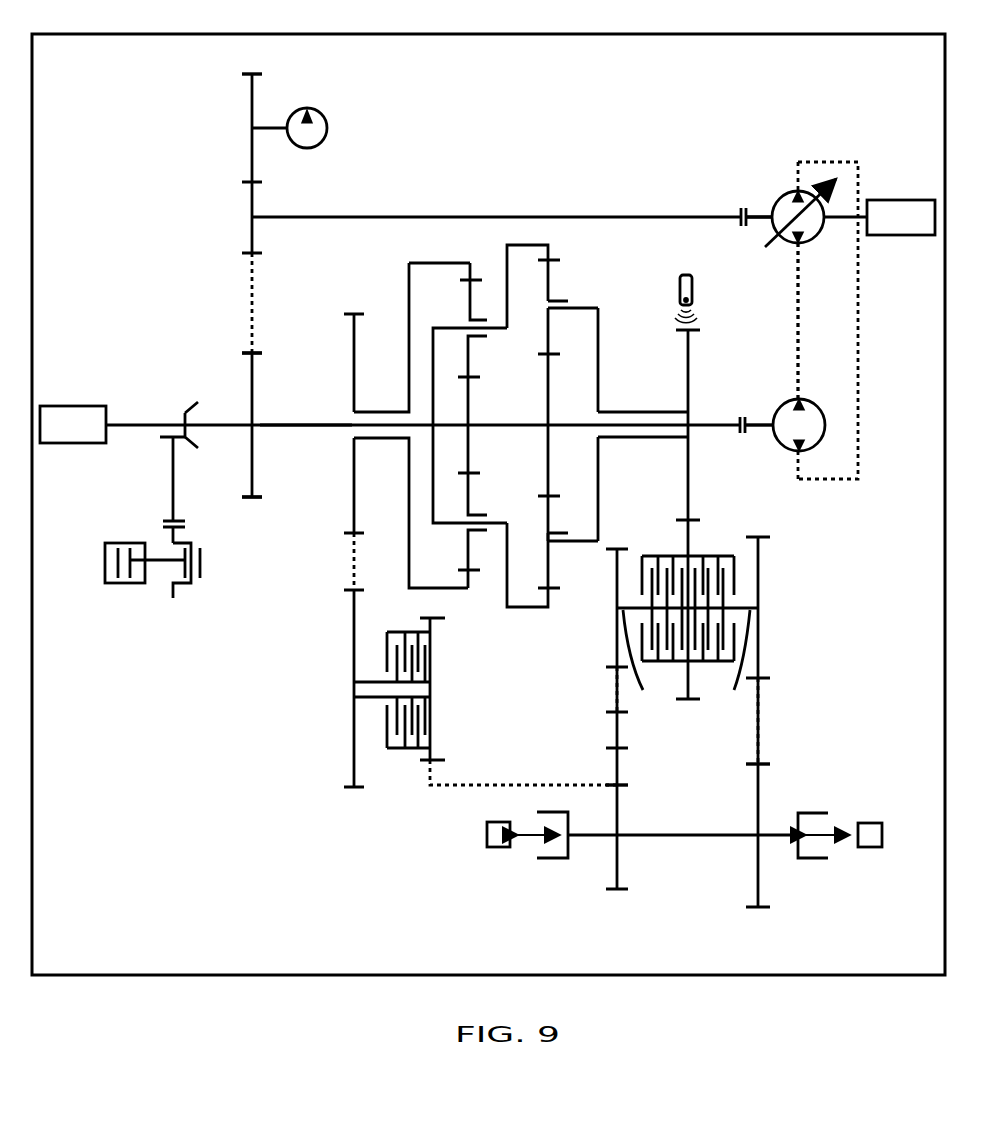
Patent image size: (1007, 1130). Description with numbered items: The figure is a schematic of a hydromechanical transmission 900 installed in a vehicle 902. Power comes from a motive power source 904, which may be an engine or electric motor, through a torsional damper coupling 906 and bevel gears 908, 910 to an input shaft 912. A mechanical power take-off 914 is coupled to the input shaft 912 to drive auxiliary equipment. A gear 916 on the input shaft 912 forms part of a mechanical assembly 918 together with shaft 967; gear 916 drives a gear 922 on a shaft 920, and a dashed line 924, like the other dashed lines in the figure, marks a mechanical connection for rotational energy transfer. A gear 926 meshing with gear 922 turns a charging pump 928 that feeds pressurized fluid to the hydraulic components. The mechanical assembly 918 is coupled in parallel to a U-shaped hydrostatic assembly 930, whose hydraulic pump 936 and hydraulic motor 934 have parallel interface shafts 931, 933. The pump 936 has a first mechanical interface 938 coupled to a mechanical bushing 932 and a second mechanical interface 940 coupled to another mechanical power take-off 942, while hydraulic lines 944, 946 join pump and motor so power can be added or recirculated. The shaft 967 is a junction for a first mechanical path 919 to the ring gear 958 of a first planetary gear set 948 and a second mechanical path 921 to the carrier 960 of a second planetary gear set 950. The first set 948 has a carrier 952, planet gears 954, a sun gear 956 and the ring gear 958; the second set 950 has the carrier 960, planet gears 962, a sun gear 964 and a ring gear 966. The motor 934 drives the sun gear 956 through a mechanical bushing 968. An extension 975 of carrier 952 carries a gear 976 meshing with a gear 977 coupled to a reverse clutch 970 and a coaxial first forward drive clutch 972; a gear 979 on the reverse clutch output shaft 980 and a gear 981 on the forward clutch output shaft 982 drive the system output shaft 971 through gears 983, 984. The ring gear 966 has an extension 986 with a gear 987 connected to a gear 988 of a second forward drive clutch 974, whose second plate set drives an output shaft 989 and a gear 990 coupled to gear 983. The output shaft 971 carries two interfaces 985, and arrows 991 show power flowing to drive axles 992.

The transmission 900 is at (892, 86).
The vehicle 902 is at (40, 34).
The motive power source 904 is at (177, 634).
The torsional damper coupling 906 is at (165, 520).
The gear 908 is at (155, 441).
The gear 910 is at (199, 402).
The input shaft 912 is at (222, 425).
The mechanical power take-off 914 is at (46, 406).
The gear 916 is at (254, 400).
The mechanical assembly 918 is at (190, 280).
The first mechanical path 919 is at (316, 366).
The shaft 920 is at (314, 217).
The second mechanical path 921 is at (322, 444).
The gear 922 is at (252, 196).
The dashed line 924 is at (250, 312).
The gear 926 is at (262, 80).
The charging pump 928 is at (328, 128).
The hydrostatic assembly 930 is at (886, 170).
The shaft 931 is at (764, 212).
The mechanical bushing 932 is at (744, 200).
The shaft 933 is at (762, 428).
The hydraulic motor 934 is at (788, 402).
The hydraulic pump 936 is at (784, 192).
The first mechanical interface 938 is at (768, 224).
The second mechanical interface 940 is at (830, 228).
The mechanical power take-off 942 is at (874, 236).
The hydraulic line 944 is at (840, 162).
The hydraulic line 946 is at (797, 324).
The first planetary gear set 948 is at (582, 264).
The second planetary gear set 950 is at (396, 264).
The carrier 952 is at (578, 306).
The planet gears 954 is at (548, 268).
The sun gear 956 is at (548, 410).
The ring gear 958 is at (538, 245).
The carrier 960 is at (466, 328).
The planet gears 962 is at (470, 287).
The sun gear 964 is at (468, 412).
The ring gear 966 is at (468, 263).
The shaft 967 is at (324, 425).
The mechanical bushing 968 is at (742, 410).
The reverse clutch 970 is at (646, 540).
The output shaft 971 is at (650, 835).
The first forward drive clutch 972 is at (718, 540).
The second forward drive clutch 974 is at (390, 620).
The extension 975 is at (612, 412).
The gear 976 is at (688, 368).
The gear 977 is at (686, 540).
The gear 979 is at (617, 650).
The output shaft 980 is at (646, 664).
The gear 981 is at (762, 666).
The output shaft 982 is at (735, 664).
The gear 983 is at (650, 796).
The gear 984 is at (757, 802).
The interfaces 985 is at (548, 872).
The extension 986 is at (380, 412).
The gear 987 is at (352, 313).
The gear 988 is at (352, 638).
The output shaft 989 is at (354, 688).
The gear 990 is at (432, 758).
The arrows 991 is at (540, 838).
The drive axles 992 is at (487, 836).